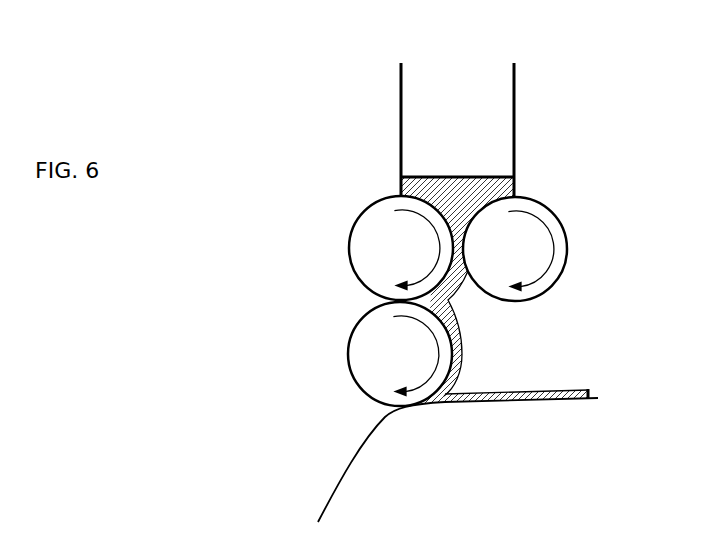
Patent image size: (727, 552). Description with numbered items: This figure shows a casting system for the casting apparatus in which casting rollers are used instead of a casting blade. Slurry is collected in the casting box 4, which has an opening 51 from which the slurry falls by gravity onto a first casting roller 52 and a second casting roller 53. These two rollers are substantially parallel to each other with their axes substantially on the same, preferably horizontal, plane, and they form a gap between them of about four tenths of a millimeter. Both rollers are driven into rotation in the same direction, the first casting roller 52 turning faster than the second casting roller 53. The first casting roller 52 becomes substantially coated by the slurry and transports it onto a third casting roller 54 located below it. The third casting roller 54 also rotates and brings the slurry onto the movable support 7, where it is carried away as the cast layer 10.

The casting box 4 is at (417, 73).
The opening 51 is at (455, 193).
The first casting roller 52 is at (360, 262).
The second casting roller 53 is at (553, 211).
The third casting roller 54 is at (362, 366).
The laminated film / coating layer 10 is at (553, 390).
The movable support 7 is at (527, 403).